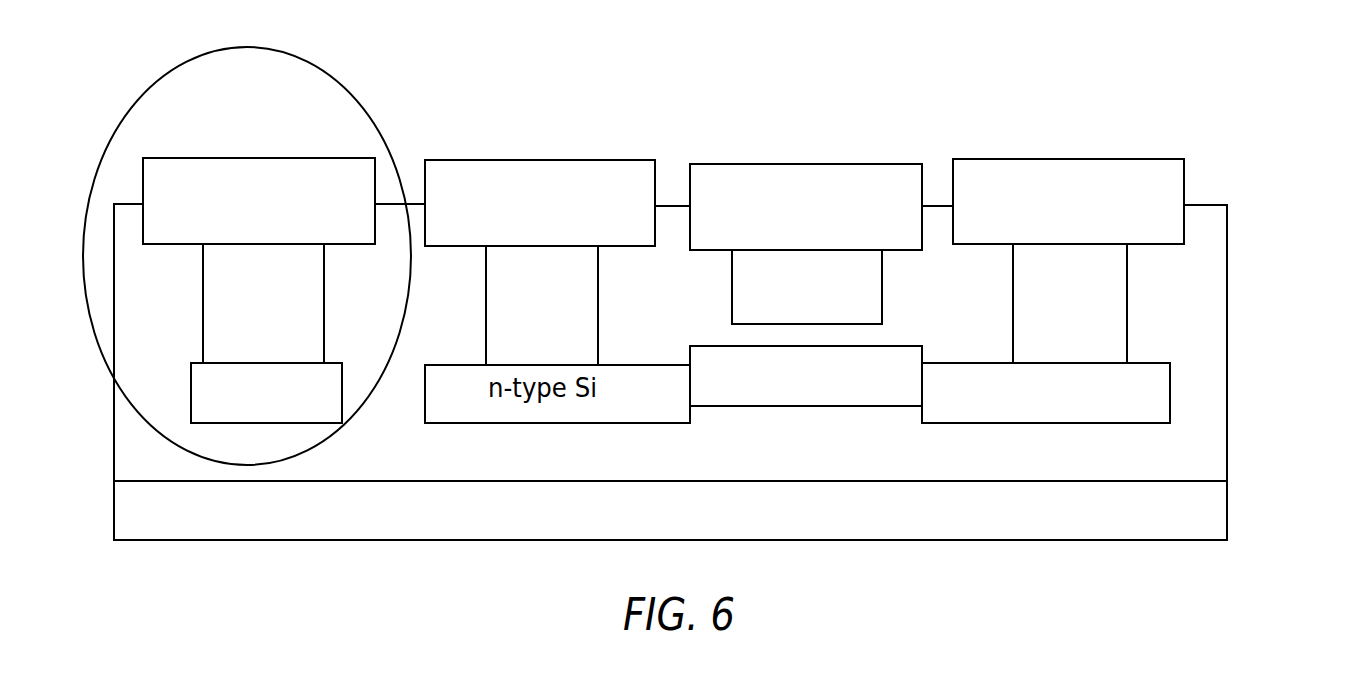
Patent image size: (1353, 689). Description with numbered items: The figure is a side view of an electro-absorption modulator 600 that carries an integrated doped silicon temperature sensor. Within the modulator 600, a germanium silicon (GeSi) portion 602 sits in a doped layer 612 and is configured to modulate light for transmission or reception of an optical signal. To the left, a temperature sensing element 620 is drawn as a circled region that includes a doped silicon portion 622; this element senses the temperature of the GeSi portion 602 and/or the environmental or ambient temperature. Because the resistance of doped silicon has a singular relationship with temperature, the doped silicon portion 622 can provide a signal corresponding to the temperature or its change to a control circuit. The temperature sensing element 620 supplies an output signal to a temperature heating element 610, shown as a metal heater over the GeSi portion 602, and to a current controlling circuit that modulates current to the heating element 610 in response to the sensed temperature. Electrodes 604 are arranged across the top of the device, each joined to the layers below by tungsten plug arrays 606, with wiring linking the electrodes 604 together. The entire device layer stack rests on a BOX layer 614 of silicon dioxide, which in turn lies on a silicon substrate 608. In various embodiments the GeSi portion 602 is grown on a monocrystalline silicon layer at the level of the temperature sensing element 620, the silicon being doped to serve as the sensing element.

The electro-absorption modulator 600 is at (1258, 124).
The germanium silicon (GeSi) portion 602 is at (711, 344).
The electrodes 604 is at (162, 158).
The tungsten plug arrays 606 is at (324, 343).
The substrate 608 is at (1227, 513).
The temperature heating element 610 is at (882, 312).
The doped layer 612 is at (979, 363).
The BOX layer 614 is at (1227, 224).
The temperature sensing element 620 is at (140, 96).
The doped silicon portion 622 is at (191, 373).